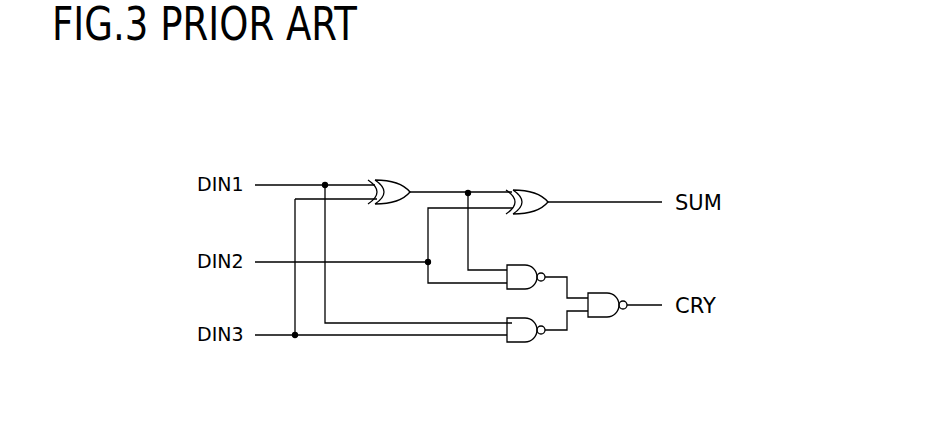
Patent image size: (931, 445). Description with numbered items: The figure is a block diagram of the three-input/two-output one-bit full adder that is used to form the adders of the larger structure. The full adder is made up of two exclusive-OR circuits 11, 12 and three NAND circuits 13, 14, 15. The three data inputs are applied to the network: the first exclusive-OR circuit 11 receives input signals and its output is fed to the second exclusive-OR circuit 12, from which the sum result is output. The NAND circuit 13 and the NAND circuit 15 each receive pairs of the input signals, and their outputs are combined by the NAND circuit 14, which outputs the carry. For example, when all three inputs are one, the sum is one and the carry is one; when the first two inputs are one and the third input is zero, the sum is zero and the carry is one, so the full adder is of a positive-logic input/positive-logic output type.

The exclusive-OR circuit 11 is at (394, 181).
The exclusive-OR circuit 12 is at (533, 189).
The NAND circuit 13 is at (530, 265).
The NAND circuit 14 is at (596, 293).
The NAND circuit 15 is at (527, 343).